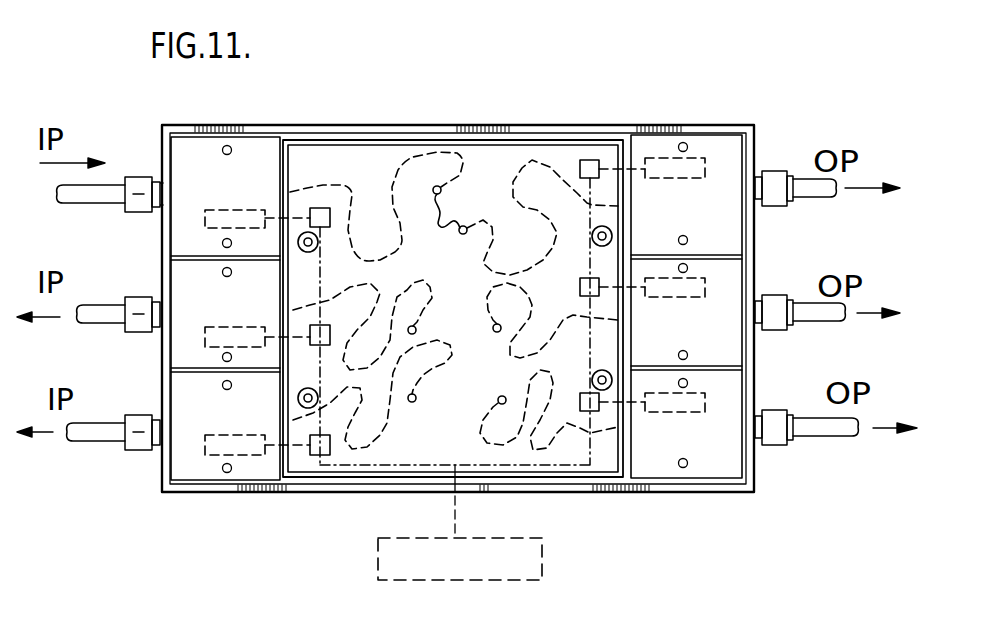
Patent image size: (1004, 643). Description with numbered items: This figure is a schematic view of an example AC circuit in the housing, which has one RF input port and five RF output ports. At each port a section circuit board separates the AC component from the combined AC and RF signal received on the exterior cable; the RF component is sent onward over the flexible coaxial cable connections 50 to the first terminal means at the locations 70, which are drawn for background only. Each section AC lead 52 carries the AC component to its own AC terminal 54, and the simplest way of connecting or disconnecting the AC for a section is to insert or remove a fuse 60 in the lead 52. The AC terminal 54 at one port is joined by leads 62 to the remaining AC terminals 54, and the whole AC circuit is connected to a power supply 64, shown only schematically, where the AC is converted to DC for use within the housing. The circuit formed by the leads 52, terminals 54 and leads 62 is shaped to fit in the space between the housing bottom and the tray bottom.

The flexible coaxial cable connection 50 is at (532, 160).
The section AC lead 52 is at (303, 453).
The AC terminal 54 is at (322, 208).
The fuse 60 is at (217, 460).
The leads 62 is at (318, 246).
The power supply 64 is at (545, 563).
The first terminal locations 70 is at (457, 295).